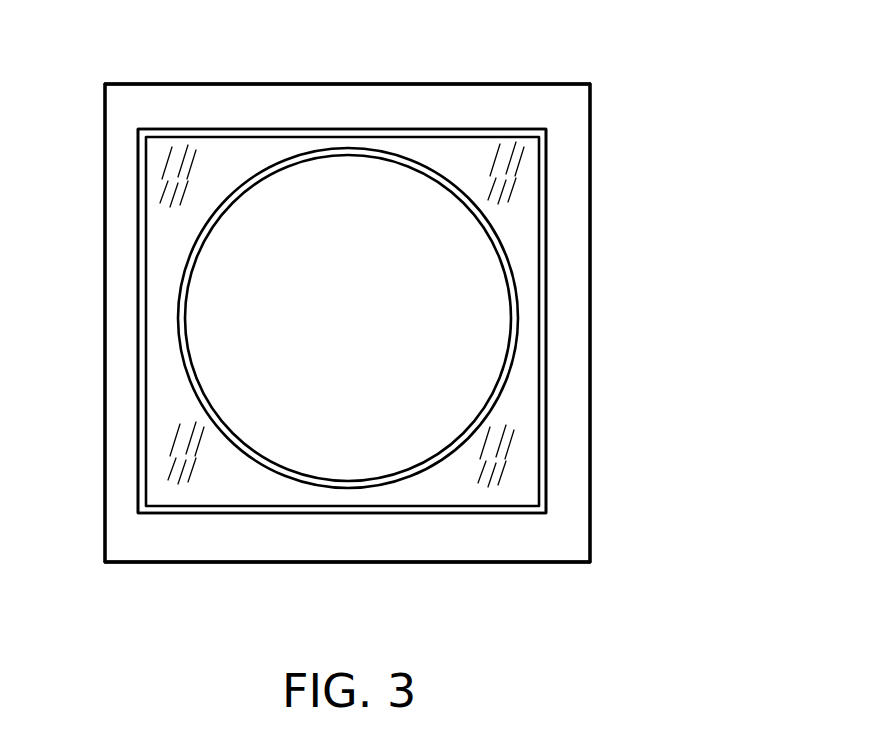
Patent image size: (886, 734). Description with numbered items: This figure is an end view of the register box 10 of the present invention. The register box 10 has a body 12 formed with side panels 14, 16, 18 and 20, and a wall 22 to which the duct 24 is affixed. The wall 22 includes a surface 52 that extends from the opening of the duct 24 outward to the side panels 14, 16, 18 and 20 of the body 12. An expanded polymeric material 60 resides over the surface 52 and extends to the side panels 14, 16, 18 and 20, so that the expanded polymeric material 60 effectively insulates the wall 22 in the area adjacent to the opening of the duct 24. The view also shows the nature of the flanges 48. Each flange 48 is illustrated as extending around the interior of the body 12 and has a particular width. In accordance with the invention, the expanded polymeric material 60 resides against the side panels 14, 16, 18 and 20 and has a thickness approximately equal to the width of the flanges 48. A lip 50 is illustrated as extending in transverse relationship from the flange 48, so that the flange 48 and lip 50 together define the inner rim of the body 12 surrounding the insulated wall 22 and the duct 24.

The register box 10 is at (655, 262).
The body 12 is at (590, 165).
The side panel 14 is at (590, 428).
The side panel 16 is at (513, 562).
The side panel 18 is at (105, 358).
The side panel 20 is at (532, 84).
The wall 22 is at (170, 418).
The duct 24 is at (235, 196).
The flange 48 is at (573, 375).
The lip 50 is at (150, 236).
The surface 52 is at (198, 498).
The expanded polymeric material 60 is at (525, 472).